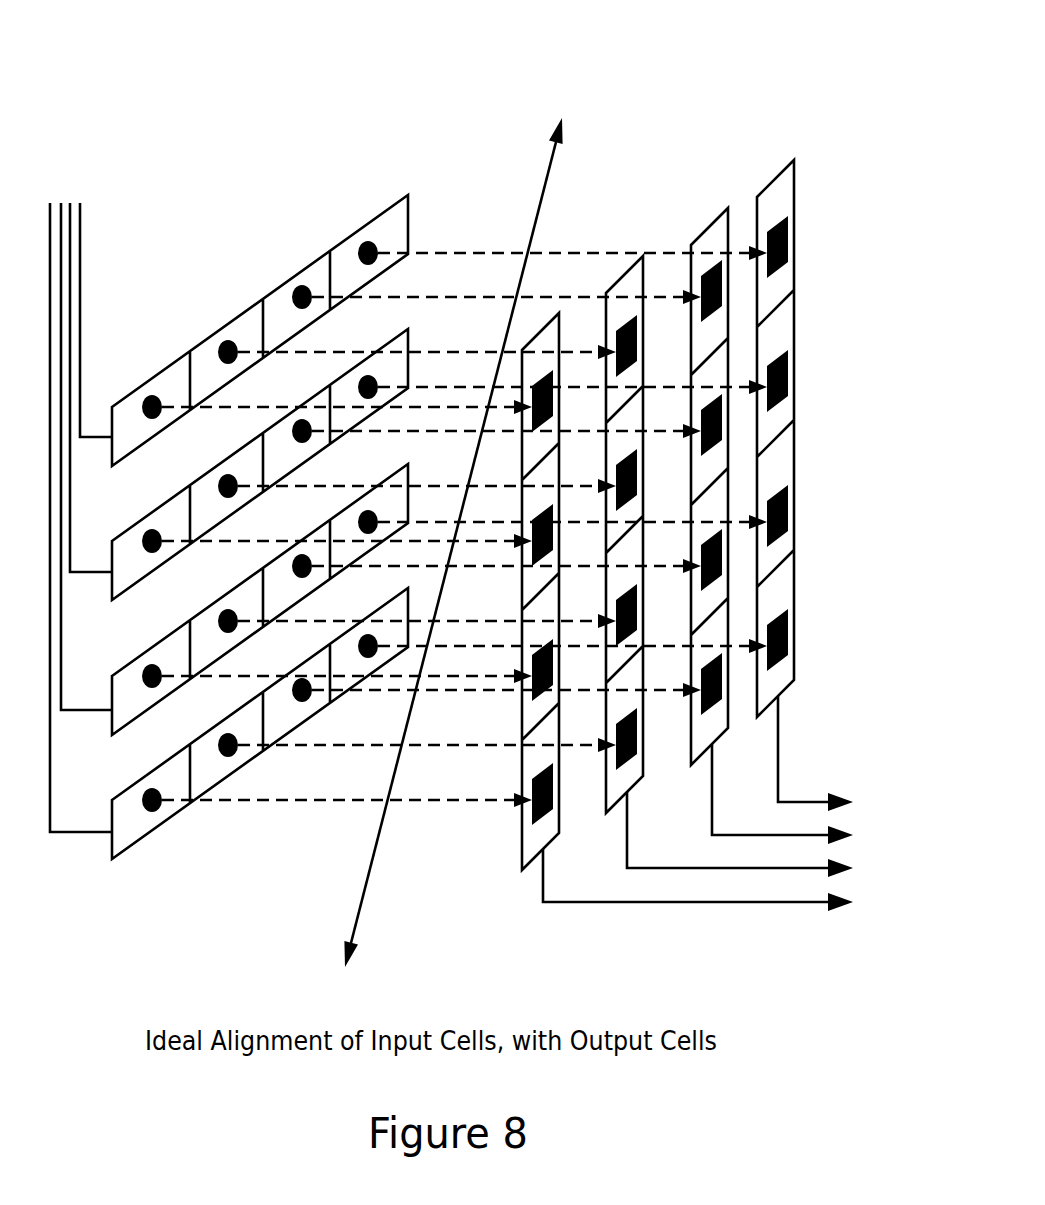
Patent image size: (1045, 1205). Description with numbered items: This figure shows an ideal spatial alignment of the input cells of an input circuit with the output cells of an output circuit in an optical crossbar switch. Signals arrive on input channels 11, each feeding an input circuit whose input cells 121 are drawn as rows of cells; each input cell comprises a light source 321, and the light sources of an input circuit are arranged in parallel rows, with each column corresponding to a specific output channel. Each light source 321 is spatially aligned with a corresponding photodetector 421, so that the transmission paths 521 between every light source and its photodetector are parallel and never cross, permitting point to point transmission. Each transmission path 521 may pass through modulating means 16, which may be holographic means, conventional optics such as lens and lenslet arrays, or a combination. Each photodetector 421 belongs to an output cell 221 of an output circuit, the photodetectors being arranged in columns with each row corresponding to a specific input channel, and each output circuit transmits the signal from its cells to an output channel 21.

The input channel 11 is at (80, 248).
The input cell 121 is at (298, 272).
The light source 321 is at (393, 242).
The transmission path 521 is at (615, 255).
The photodetector 421 is at (783, 200).
The output cell 221 is at (798, 490).
The output channel 21 is at (805, 802).
The modulating means 16 is at (362, 900).